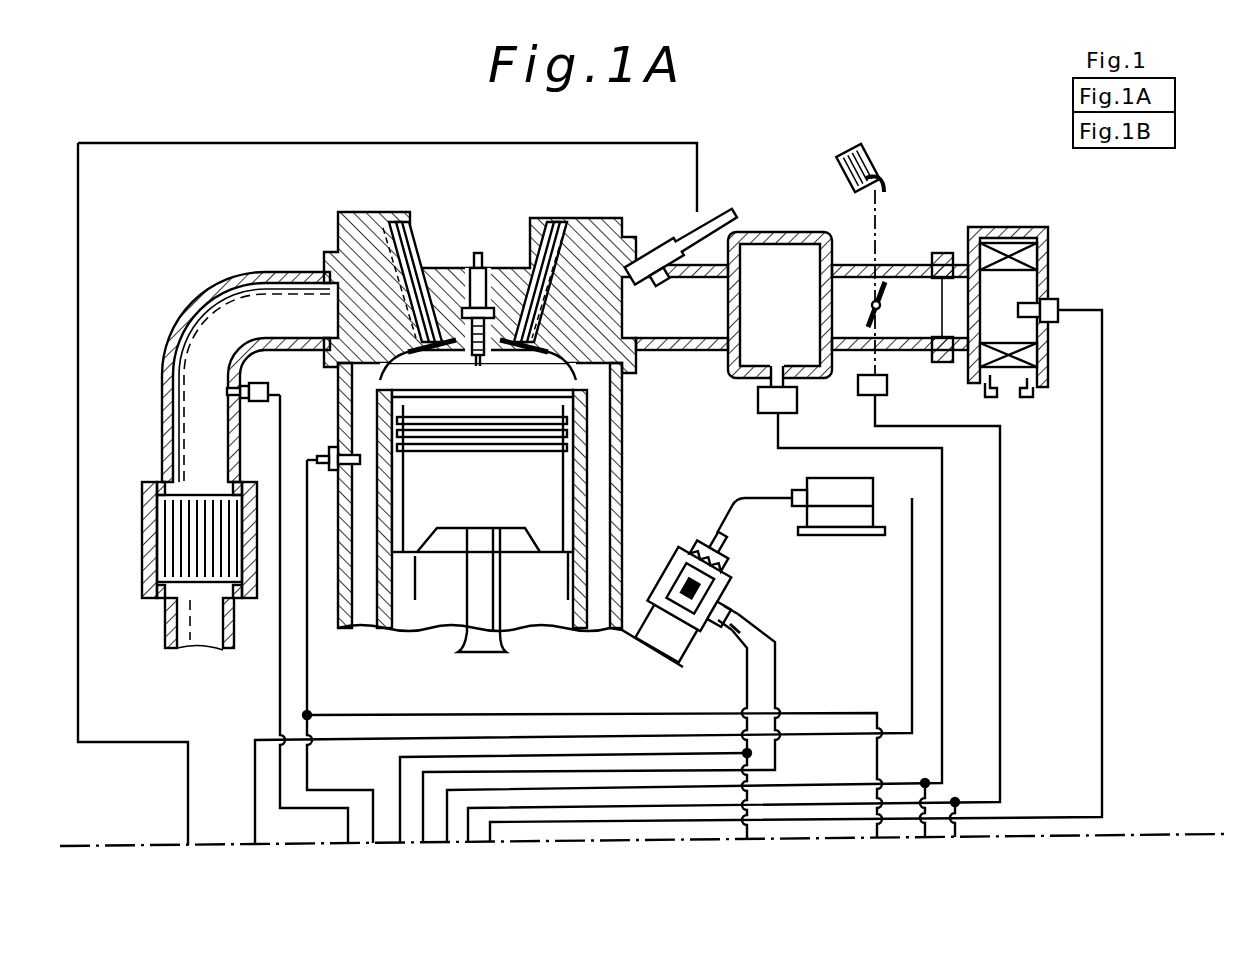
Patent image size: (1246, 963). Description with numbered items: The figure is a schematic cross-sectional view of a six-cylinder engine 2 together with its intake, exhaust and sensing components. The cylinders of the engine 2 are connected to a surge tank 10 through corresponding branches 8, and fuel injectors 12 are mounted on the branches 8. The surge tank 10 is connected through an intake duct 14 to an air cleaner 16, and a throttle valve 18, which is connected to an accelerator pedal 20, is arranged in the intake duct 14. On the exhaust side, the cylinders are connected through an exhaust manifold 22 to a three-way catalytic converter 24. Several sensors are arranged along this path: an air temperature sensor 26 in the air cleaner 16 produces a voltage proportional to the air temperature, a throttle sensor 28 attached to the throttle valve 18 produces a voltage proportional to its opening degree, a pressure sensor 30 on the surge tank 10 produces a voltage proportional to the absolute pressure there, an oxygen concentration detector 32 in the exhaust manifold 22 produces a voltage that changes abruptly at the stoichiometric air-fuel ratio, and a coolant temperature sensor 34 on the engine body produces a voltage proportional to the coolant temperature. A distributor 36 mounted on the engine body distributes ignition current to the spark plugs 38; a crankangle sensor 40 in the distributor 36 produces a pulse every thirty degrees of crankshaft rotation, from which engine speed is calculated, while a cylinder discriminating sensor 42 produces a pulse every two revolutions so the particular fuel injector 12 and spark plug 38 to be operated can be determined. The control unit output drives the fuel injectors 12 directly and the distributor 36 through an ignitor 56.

The six-cylinder engine 2 is at (532, 212).
The branches 8 is at (680, 352).
The surge tank 10 is at (783, 232).
The fuel injector 12 is at (678, 244).
The intake duct 14 is at (896, 265).
The air cleaner 16 is at (1048, 230).
The throttle valve 18 is at (863, 325).
The accelerator pedal 20 is at (880, 152).
The exhaust manifold 22 is at (206, 305).
The three-way catalytic converter 24 is at (141, 572).
The air temperature sensor 26 is at (1062, 300).
The throttle sensor 28 is at (887, 386).
The pressure sensor 30 is at (797, 401).
The oxygen concentration detector 32 is at (266, 392).
The coolant temperature sensor 34 is at (323, 449).
The distributor 36 is at (695, 548).
The spark plug 38 is at (480, 262).
The crankangle sensor 40 is at (716, 640).
The cylinder discriminating sensor 42 is at (728, 602).
The ignitor 56 is at (852, 536).